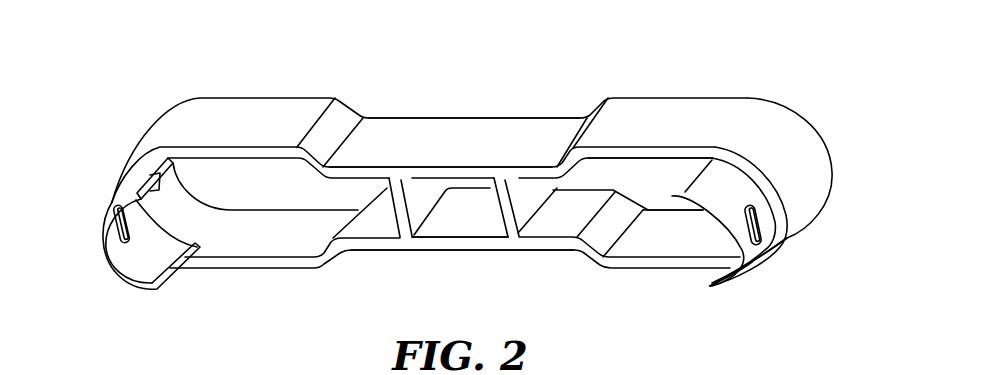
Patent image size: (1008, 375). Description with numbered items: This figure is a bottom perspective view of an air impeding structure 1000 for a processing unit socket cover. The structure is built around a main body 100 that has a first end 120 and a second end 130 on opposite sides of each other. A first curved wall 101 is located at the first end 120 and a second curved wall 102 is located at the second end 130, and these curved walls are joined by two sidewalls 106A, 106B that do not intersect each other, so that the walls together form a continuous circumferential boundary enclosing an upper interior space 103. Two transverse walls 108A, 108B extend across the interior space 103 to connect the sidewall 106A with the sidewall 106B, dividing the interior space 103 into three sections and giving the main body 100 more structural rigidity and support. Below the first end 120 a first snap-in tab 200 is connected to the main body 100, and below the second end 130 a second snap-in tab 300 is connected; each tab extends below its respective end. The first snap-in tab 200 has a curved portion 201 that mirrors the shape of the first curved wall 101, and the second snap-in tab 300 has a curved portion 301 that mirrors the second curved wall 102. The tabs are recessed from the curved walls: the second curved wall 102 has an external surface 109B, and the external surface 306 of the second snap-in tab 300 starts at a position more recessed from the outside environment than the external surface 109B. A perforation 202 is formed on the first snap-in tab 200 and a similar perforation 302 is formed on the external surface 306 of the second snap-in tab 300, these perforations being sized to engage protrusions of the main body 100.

The air impeding structure 1000 is at (647, 70).
The main body 100 is at (555, 108).
The first curved wall 101 is at (125, 158).
The second curved wall 102 is at (817, 165).
The interior space 103 is at (262, 178).
The sidewall 106A is at (444, 252).
The sidewall 106B is at (460, 128).
The transverse wall 108A is at (391, 222).
The transverse wall 108B is at (493, 222).
The external surface 109B is at (783, 130).
The first end 120 is at (215, 160).
The second end 130 is at (715, 172).
The first snap-in tab 200 is at (122, 266).
The curved portion 201 is at (140, 287).
The perforation 202 is at (113, 234).
The second snap-in tab 300 is at (758, 224).
The curved portion 301 is at (727, 288).
The perforation 302 is at (762, 224).
The external surface 306 is at (738, 182).